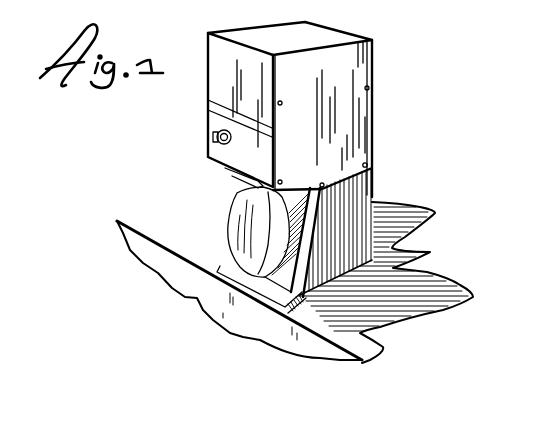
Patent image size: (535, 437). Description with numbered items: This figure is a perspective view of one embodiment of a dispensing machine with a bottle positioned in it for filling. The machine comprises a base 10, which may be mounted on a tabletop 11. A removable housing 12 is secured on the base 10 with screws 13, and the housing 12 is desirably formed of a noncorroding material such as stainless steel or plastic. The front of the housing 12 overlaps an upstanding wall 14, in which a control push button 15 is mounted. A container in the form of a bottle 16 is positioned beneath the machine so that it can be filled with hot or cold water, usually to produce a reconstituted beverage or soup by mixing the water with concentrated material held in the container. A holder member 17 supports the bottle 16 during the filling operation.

The base 10 is at (350, 185).
The tabletop 11 is at (413, 288).
The removable housing 12 is at (322, 69).
The screws 13 is at (367, 163).
The upstanding wall 14 is at (230, 153).
The control push button 15 is at (213, 135).
The bottle 16 is at (243, 213).
The holder member 17 is at (232, 177).